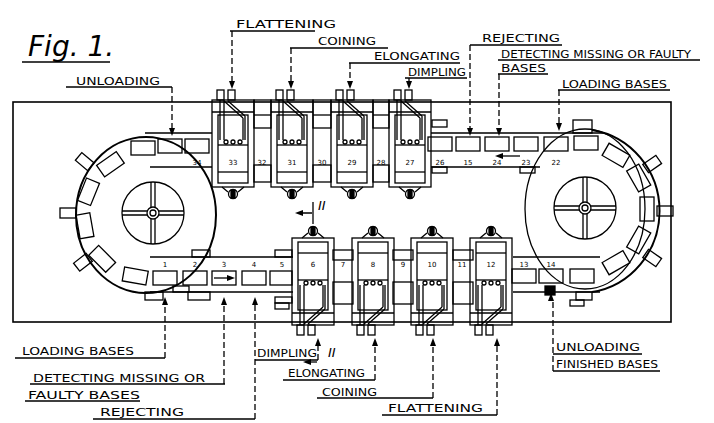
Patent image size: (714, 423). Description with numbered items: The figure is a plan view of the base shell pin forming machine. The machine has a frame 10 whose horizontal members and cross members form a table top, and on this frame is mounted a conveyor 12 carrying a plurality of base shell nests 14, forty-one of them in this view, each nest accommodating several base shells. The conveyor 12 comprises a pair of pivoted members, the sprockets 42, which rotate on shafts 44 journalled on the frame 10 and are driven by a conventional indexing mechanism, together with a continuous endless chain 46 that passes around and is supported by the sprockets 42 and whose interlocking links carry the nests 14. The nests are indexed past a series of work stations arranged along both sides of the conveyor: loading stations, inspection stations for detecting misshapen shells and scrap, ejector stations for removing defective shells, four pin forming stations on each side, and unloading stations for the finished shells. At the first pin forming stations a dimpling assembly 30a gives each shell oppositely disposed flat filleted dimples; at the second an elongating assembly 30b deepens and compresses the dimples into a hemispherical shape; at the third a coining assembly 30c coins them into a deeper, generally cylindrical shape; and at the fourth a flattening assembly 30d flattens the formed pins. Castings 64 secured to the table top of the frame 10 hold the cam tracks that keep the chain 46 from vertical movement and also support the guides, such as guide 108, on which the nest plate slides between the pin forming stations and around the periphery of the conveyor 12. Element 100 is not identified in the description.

The frame 10 is at (671, 322).
The conveyor 12 is at (618, 150).
The base shell nest 14 is at (128, 141).
The dimpling assembly 30a is at (436, 182).
The elongating assembly 30b is at (376, 227).
The coining assembly 30c is at (290, 195).
The flattening assembly 30d is at (245, 194).
The sprocket 42 is at (112, 239).
The shaft 44 is at (150, 209).
The chain 46 is at (110, 278).
The casting 64 is at (283, 309).
The loading device 100 is at (181, 294).
The guide 108 is at (200, 258).